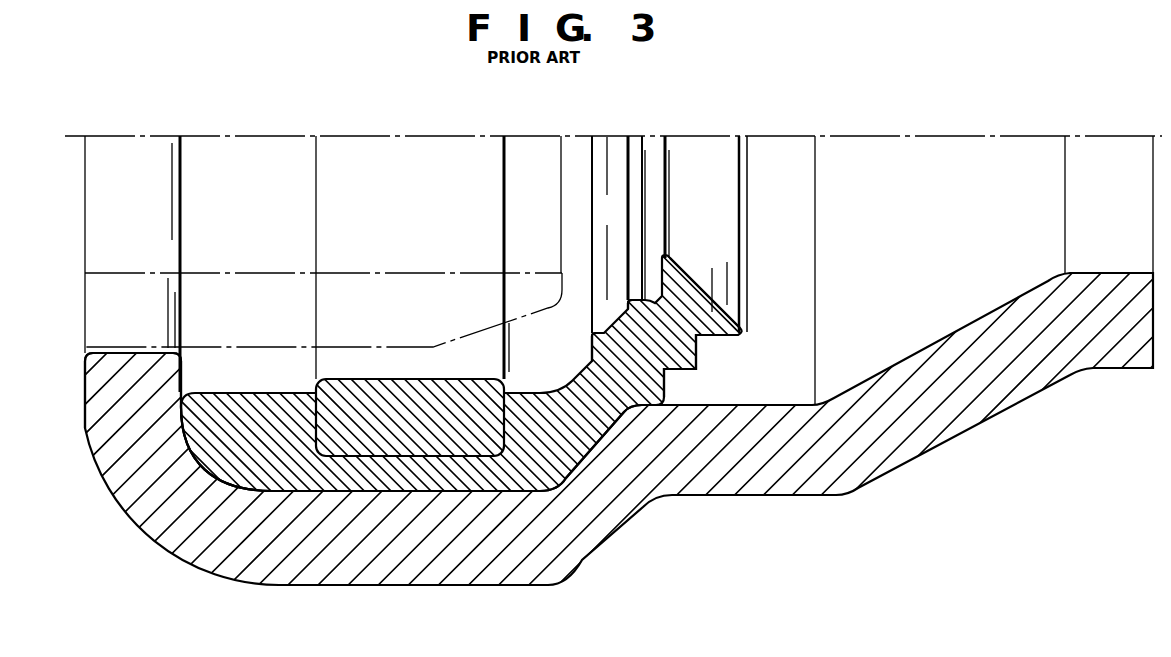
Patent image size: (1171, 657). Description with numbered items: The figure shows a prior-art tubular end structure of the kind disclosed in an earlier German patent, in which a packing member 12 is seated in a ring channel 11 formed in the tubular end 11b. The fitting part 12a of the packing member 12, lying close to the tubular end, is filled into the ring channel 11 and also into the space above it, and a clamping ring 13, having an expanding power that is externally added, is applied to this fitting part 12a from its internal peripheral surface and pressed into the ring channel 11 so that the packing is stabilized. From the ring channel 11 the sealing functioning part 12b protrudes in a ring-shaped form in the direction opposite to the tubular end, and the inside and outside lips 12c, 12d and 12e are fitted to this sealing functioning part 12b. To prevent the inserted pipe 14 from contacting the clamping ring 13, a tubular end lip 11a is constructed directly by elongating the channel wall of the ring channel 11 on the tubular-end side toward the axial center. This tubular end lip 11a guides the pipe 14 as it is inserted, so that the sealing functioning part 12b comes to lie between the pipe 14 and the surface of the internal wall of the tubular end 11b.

The ring channel 11 is at (504, 493).
The tubular end lip 11a is at (100, 432).
The tubular end 11b is at (730, 404).
The packing member 12 is at (244, 400).
The fitting part 12a is at (402, 482).
The sealing functioning part 12b is at (703, 318).
The lip 12c is at (671, 262).
The lip 12d is at (640, 300).
The lip 12e is at (596, 336).
The clamping ring 13 is at (363, 392).
The pipe 14 is at (360, 273).